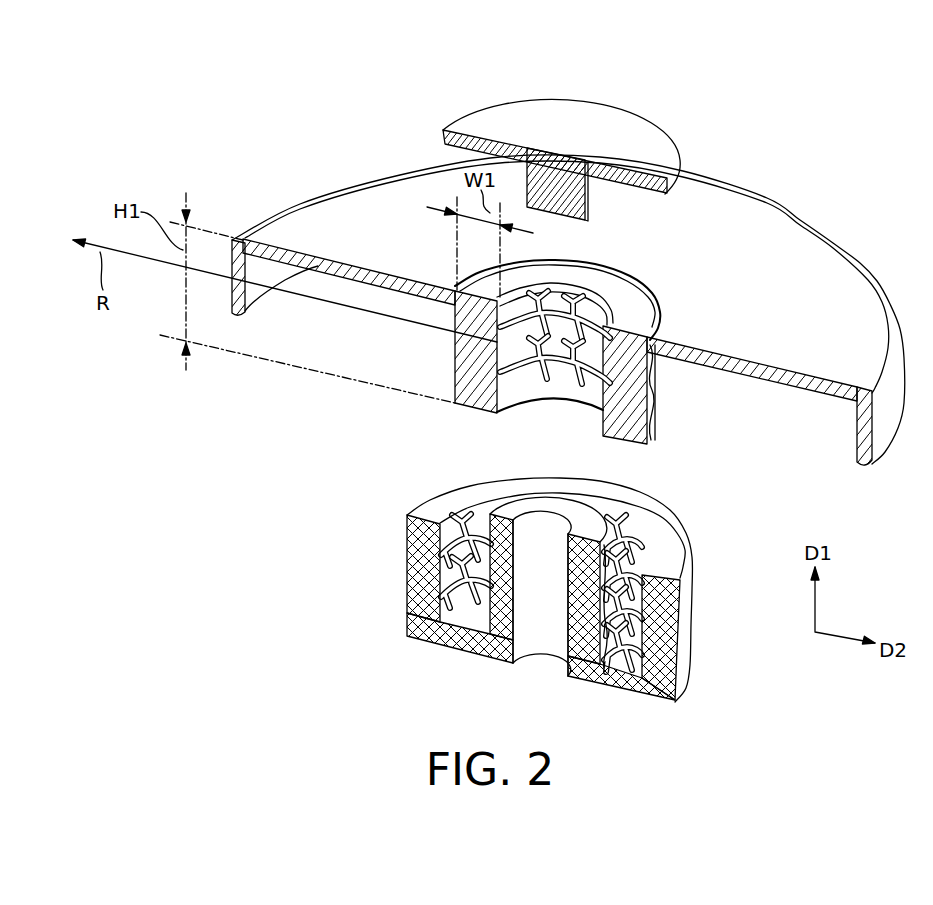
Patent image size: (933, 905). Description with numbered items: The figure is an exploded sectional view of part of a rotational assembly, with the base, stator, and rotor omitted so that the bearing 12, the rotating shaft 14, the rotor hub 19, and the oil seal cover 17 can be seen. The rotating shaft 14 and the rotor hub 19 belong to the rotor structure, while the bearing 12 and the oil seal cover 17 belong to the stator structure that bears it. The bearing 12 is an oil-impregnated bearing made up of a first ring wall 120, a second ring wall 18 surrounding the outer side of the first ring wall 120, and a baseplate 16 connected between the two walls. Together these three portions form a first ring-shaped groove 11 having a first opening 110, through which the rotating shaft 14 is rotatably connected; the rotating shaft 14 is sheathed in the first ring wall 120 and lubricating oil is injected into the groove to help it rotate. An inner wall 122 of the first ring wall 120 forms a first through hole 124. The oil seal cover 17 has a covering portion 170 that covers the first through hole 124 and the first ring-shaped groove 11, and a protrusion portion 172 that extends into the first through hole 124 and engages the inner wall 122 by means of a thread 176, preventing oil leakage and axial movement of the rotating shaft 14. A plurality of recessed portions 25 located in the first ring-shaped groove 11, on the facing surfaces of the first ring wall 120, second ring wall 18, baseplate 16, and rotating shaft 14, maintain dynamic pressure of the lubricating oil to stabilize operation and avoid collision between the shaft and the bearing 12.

The oil seal cover 17 is at (561, 120).
The covering portion 170 is at (540, 120).
The protrusion portion 172 is at (566, 197).
The thread 176 is at (587, 185).
The rotor hub 19 is at (349, 207).
The rotating shaft 14 is at (473, 367).
The recessed portions 25 is at (551, 392).
The first ring-shaped groove 11 is at (491, 573).
The first opening 110 is at (439, 510).
The bearing 12 is at (485, 607).
The second ring wall 18 is at (413, 600).
The baseplate 16 is at (497, 622).
The first ring wall 120 is at (505, 640).
The inner wall 122 is at (524, 642).
The first through hole 124 is at (553, 677).